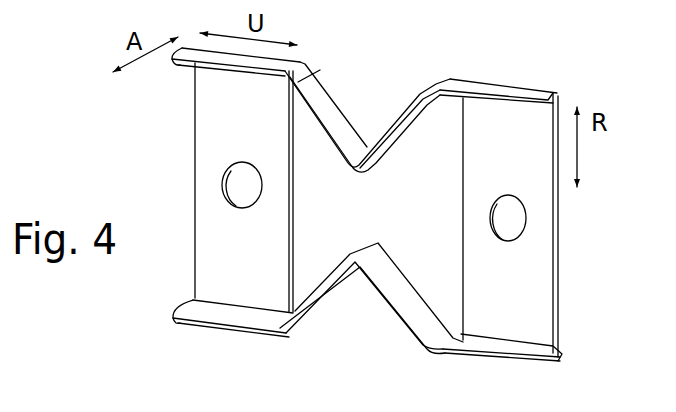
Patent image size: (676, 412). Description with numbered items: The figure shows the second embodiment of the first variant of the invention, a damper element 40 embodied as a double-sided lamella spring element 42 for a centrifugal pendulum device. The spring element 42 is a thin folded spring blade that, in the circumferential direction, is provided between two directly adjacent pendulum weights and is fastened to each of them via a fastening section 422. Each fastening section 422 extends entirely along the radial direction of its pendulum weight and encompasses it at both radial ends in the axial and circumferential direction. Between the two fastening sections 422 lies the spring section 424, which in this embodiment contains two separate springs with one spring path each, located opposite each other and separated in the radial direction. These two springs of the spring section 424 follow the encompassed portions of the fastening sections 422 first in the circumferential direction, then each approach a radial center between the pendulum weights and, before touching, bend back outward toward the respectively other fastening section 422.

The damper element 40 is at (567, 68).
The spring element 42 is at (361, 230).
The fastening section 422 is at (280, 346).
The spring section 424 is at (419, 362).